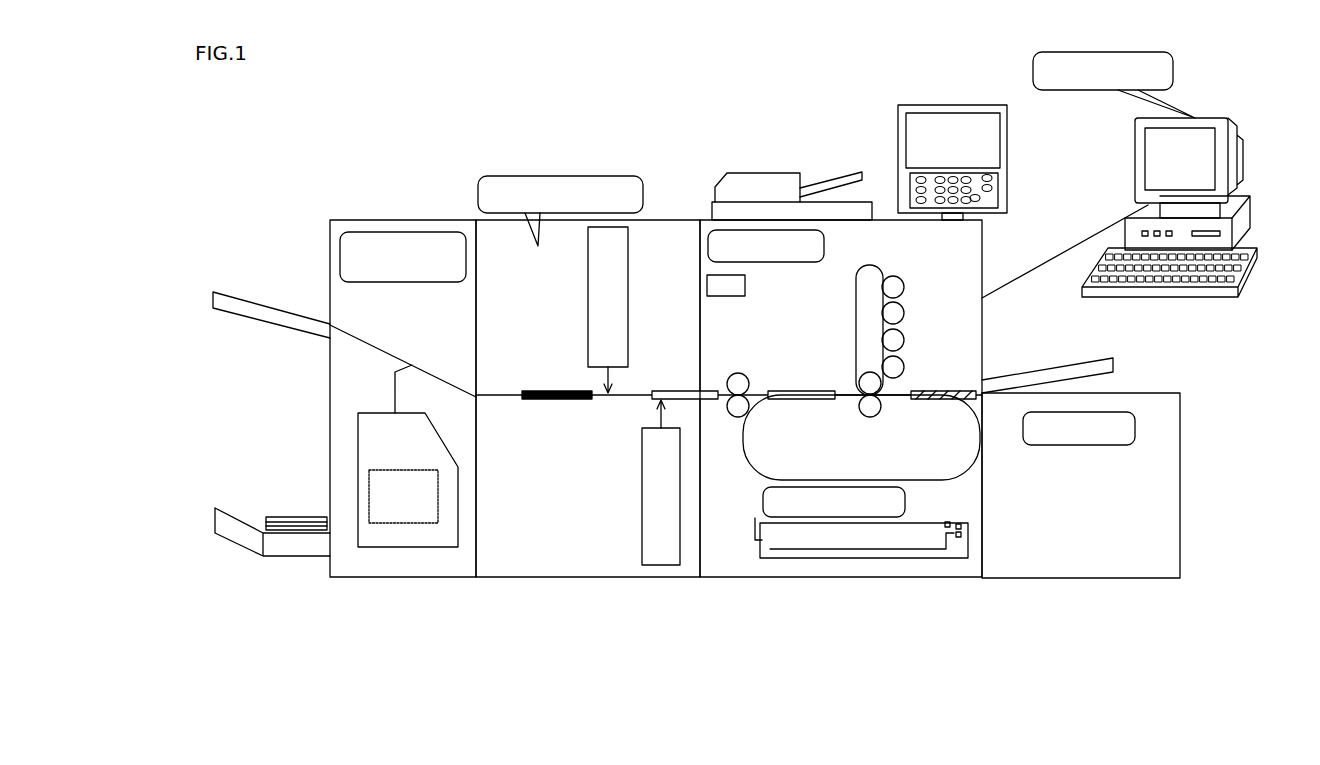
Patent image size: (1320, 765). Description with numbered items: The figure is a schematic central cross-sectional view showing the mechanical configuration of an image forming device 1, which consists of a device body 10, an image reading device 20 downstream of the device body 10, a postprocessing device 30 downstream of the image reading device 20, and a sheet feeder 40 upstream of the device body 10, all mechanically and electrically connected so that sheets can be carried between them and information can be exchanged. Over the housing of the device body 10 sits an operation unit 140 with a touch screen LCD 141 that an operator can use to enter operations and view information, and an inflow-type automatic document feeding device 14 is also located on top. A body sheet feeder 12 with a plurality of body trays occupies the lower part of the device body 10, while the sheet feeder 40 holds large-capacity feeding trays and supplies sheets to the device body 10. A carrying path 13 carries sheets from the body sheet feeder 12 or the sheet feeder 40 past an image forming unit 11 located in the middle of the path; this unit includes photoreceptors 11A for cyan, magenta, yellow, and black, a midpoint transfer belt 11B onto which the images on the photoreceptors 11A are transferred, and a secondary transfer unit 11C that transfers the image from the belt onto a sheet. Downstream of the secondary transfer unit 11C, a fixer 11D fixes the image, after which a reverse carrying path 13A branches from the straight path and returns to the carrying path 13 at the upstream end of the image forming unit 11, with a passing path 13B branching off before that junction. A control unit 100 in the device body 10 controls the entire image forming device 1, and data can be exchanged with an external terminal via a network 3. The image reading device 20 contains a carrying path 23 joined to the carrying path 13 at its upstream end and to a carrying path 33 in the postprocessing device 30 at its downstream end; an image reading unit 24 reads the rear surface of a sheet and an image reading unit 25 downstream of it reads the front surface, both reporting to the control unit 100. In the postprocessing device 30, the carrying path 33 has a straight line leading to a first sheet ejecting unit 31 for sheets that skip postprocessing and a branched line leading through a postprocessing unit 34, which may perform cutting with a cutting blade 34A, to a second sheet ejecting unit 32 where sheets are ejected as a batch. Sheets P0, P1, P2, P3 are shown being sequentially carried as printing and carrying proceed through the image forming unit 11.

The image forming device 1 is at (735, 396).
The network 3 is at (1063, 247).
The device body 10 is at (858, 578).
The image forming unit 11 is at (854, 341).
The photoreceptors 11A is at (918, 305).
The midpoint transfer belt 11B is at (852, 318).
The secondary transfer unit 11C is at (850, 393).
The fixer 11D is at (742, 380).
The body sheet feeder 12 is at (782, 558).
The carrying path 13 is at (873, 461).
The reverse carrying path 13A is at (752, 462).
The passing path 13B is at (968, 484).
The automatic document feeding device 14 is at (752, 172).
The image reading device 20 is at (557, 578).
The carrying path 23 is at (619, 398).
The image reading unit 24 is at (661, 565).
The image reading unit 25 is at (628, 262).
The postprocessing device 30 is at (432, 578).
The first sheet ejecting unit 31 is at (228, 315).
The second sheet ejecting unit 32 is at (231, 508).
The carrying path 33 is at (457, 388).
The postprocessing unit 34 is at (351, 526).
The cutting blade 34A is at (388, 470).
The sheet feeder 40 is at (1122, 578).
The control unit 100 is at (725, 296).
The operation unit 140 is at (990, 124).
The touch screen LCD 141 is at (958, 152).
The sheet P0 is at (556, 400).
The sheet P1 is at (668, 390).
The sheet P2 is at (816, 400).
The sheet P3 is at (952, 390).